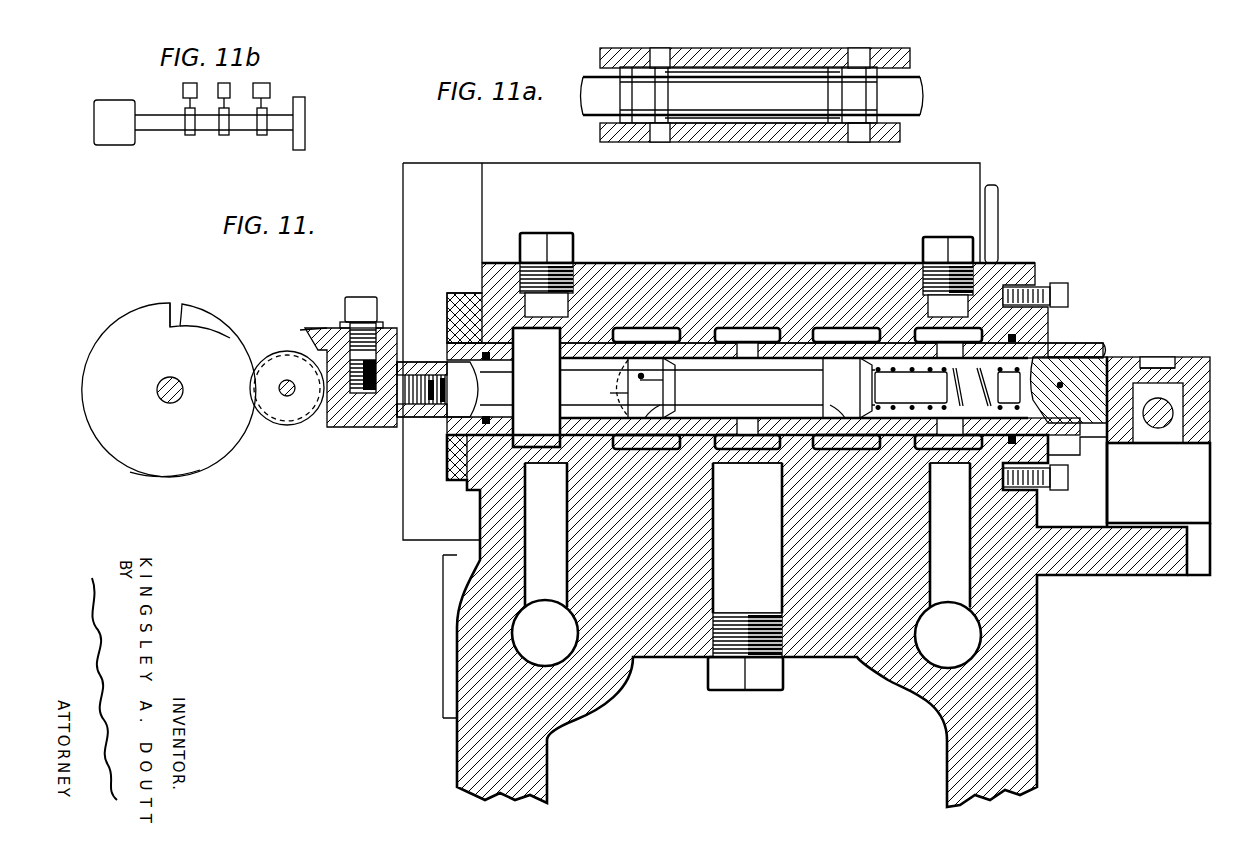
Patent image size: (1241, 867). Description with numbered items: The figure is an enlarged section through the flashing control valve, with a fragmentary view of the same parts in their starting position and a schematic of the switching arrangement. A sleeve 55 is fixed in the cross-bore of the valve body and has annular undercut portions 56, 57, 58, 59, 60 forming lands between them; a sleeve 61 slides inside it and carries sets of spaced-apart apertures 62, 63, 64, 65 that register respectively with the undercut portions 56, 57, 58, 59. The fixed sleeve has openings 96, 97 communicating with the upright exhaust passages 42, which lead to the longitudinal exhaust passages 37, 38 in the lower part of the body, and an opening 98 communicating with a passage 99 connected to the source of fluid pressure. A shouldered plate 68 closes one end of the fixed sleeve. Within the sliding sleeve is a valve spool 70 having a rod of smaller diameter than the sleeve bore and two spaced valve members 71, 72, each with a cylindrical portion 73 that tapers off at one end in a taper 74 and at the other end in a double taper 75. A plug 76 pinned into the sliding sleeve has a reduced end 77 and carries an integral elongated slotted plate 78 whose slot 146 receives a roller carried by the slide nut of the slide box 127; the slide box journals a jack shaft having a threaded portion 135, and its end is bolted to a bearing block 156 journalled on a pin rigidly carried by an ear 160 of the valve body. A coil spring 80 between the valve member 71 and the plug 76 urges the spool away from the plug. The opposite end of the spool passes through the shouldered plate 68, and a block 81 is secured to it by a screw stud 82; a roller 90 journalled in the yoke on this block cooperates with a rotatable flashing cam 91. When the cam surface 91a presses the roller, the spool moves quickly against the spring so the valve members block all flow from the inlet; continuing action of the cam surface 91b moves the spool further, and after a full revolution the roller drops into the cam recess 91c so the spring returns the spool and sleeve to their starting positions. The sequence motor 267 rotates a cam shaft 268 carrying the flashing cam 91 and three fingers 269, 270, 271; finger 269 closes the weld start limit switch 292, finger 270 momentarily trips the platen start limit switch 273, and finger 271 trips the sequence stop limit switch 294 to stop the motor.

In FIG. 11b, the sequence motor 267 is at (114, 122).
In FIG. 11b, the cam shaft 268 is at (150, 130).
In FIG. 11, the cam shaft 268 is at (165, 405).
In FIG. 11b, the finger 271 is at (190, 133).
In FIG. 11b, the finger 269 is at (225, 133).
In FIG. 11b, the finger 270 is at (262, 133).
In FIG. 11b, the sequence stop limit switch 294 is at (183, 92).
In FIG. 11b, the switch 292 is at (227, 91).
In FIG. 11b, the platen start limit switch 273 is at (270, 90).
In FIG. 11b, the flashing cam 91 is at (298, 129).
In FIG. 11, the flashing cam 91 is at (192, 458).
In FIG. 11, the cam surface 91a is at (236, 356).
In FIG. 11, the cam surface 91b is at (212, 463).
In FIG. 11, the cam recess 91c is at (183, 320).
In FIG. 11, the roller 90 is at (288, 427).
In FIG. 11, the block 81 is at (352, 429).
In FIG. 11, the screw stud 82 is at (413, 407).
In FIG. 11, the shouldered plate 68 is at (447, 477).
In FIG. 11, the undercut portion 56 is at (975, 335).
In FIG. 11, the undercut portion 57 is at (858, 335).
In FIG. 11, the undercut portion 58 is at (748, 335).
In FIG. 11, the undercut portion 59 is at (660, 350).
In FIG. 11, the undercut portion 60 is at (512, 320).
In FIG. 11a, the sleeve 61 is at (900, 132).
In FIG. 11, the sleeve 61 is at (592, 345).
In FIG. 11, the apertures 62 is at (957, 455).
In FIG. 11a, the apertures 63 is at (863, 142).
In FIG. 11, the apertures 63 is at (845, 412).
In FIG. 11, the apertures 64 is at (757, 455).
In FIG. 11a, the apertures 65 is at (663, 132).
In FIG. 11, the apertures 65 is at (650, 418).
In FIG. 11a, the valve spool 70 is at (917, 97).
In FIG. 11, the valve spool 70 is at (790, 380).
In FIG. 11a, the valve member 71 is at (883, 87).
In FIG. 11, the valve member 71 is at (840, 380).
In FIG. 11a, the valve member 72 is at (640, 102).
In FIG. 11, the valve member 72 is at (641, 372).
In FIG. 11, the cylindrical portion 73 is at (640, 380).
In FIG. 11, the taper 74 is at (625, 393).
In FIG. 11, the double taper 75 is at (673, 382).
In FIG. 11, the plug 76 is at (1062, 370).
In FIG. 11, the reduced end 77 is at (1055, 350).
In FIG. 11, the slotted plate 78 is at (1120, 364).
In FIG. 11, the coil spring 80 is at (1107, 455).
In FIG. 11, the threaded portion 135 is at (1158, 405).
In FIG. 11, the slot 146 is at (1152, 368).
In FIG. 11, the slide box 127 is at (1126, 452).
In FIG. 11, the bearing block 156 is at (1176, 530).
In FIG. 11, the ear 160 is at (1128, 577).
In FIG. 11, the upright passages 42 is at (532, 552).
In FIG. 11, the exhaust passage 37 is at (522, 640).
In FIG. 11, the exhaust passage 38 is at (973, 642).
In FIG. 11, the sleeve 55 is at (568, 486).
In FIG. 11, the opening 96 is at (538, 455).
In FIG. 11, the opening 97 is at (942, 455).
In FIG. 11, the opening 98 is at (745, 455).
In FIG. 11, the passage 99 is at (700, 612).